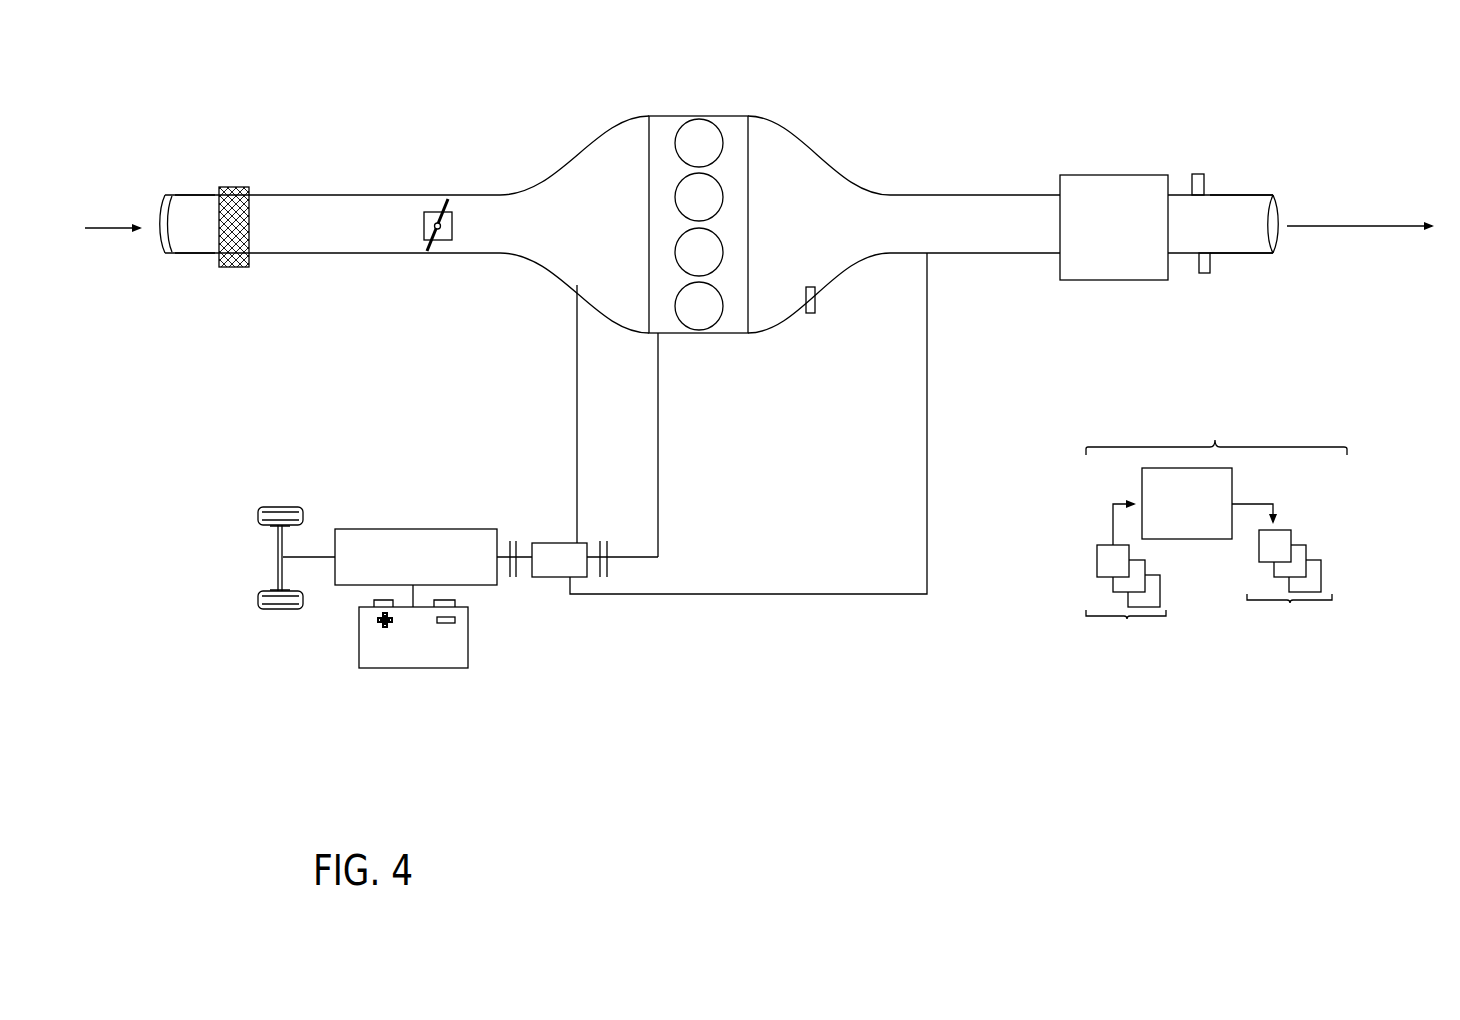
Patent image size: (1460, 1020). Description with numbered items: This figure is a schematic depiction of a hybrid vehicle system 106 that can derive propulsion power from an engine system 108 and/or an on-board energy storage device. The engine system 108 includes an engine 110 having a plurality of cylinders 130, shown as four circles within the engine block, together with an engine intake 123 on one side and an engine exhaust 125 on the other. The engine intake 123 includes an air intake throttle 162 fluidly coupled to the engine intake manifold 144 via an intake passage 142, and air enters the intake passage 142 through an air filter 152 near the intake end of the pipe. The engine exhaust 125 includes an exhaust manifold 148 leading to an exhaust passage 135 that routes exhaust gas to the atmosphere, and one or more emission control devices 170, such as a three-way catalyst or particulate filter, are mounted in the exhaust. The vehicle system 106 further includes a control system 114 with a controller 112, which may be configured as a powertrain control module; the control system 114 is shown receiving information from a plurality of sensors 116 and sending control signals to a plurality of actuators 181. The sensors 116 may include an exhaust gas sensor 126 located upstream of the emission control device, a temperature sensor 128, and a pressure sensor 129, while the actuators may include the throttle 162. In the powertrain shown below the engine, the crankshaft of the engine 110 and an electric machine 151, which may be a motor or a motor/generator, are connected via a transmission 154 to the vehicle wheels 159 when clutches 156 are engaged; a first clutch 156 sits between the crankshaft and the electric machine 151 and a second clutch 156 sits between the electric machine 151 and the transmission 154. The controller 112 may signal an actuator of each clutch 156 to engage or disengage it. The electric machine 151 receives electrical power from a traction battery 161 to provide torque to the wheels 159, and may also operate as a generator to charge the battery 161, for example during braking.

The hybrid vehicle system 106 is at (185, 92).
The engine system 108 is at (1308, 90).
The engine 110 is at (749, 206).
The controller 112 is at (1193, 506).
The control system 114 is at (1216, 424).
The sensors 116 is at (1126, 607).
The engine intake 123 is at (573, 148).
The engine exhaust 125 is at (863, 155).
The exhaust gas sensor 126 is at (815, 292).
The temperature sensor 128 is at (1205, 273).
The pressure sensor 129 is at (1198, 174).
The cylinders 130 is at (723, 134).
The exhaust passage 135 is at (1252, 194).
The intake passage 142 is at (203, 254).
The engine intake manifold 144 is at (606, 224).
The exhaust manifold 148 is at (828, 224).
The electric machine 151 is at (560, 577).
The air filter 152 is at (237, 186).
The transmission 154 is at (357, 585).
The clutches 156 is at (518, 545).
The vehicle wheels 159 is at (280, 610).
The traction battery 161 is at (419, 668).
The air intake throttle 162 is at (462, 230).
The emission control devices 170 is at (1101, 175).
The actuators 181 is at (1289, 591).